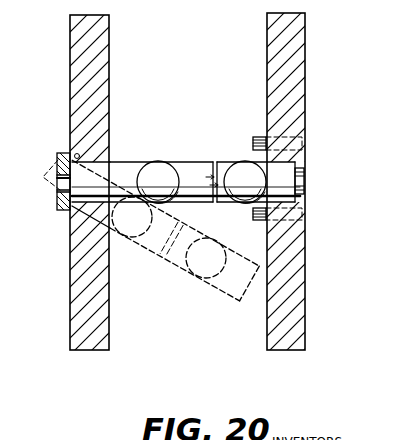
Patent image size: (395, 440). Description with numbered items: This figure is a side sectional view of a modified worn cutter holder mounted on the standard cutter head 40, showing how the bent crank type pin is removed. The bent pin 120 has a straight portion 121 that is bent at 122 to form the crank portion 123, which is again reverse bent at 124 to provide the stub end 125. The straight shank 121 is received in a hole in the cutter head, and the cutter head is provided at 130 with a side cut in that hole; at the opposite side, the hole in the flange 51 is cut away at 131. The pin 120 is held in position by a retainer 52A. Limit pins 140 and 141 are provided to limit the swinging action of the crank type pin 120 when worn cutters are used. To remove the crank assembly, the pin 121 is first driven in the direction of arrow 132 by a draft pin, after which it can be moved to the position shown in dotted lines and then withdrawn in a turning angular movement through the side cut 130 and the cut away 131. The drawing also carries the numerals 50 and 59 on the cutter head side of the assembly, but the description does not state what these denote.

The flange 51 is at (70, 55).
The cutter head 40 is at (305, 193).
The right support plate 50 is at (305, 82).
The retainer 52A is at (57, 162).
The cut away 131 is at (77, 153).
The bent pin 120 is at (138, 161).
The straight portion 121 is at (92, 173).
The bend 122 is at (158, 167).
The crank portion 123 is at (199, 165).
The reverse bend 124 is at (238, 163).
The stub end 125 is at (282, 167).
The side cut 130 is at (74, 228).
The limit pin 141 is at (257, 137).
The limit pin 140 is at (255, 218).
The nut 59 is at (307, 185).
The arrow 132 is at (321, 177).